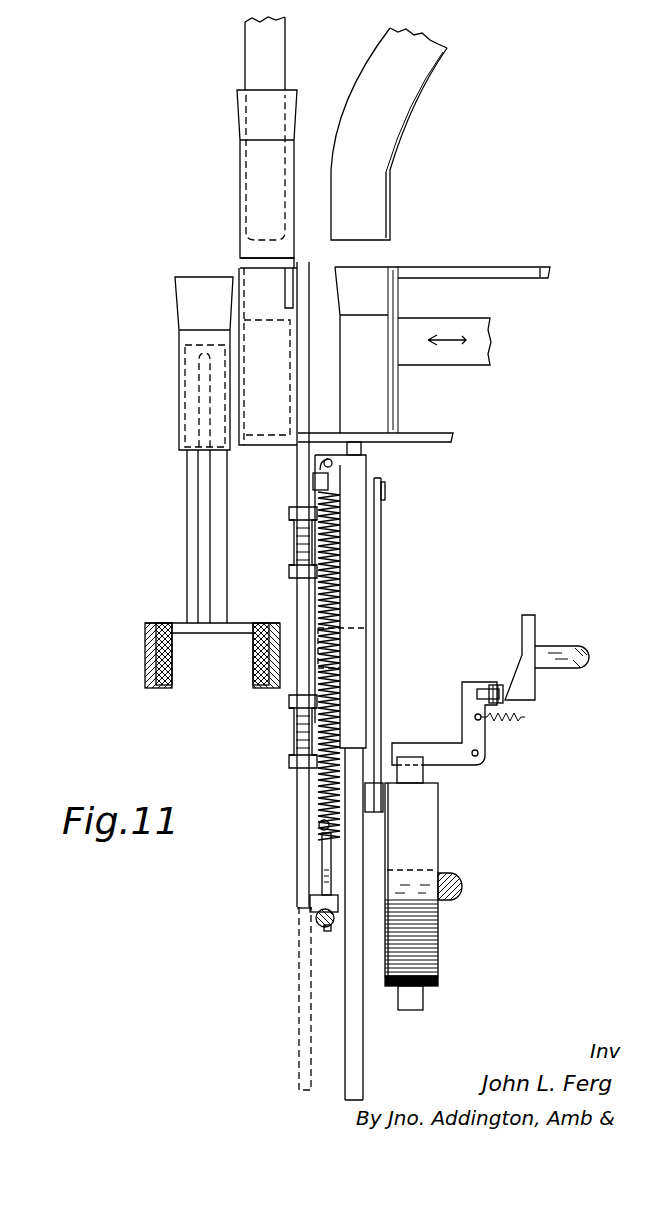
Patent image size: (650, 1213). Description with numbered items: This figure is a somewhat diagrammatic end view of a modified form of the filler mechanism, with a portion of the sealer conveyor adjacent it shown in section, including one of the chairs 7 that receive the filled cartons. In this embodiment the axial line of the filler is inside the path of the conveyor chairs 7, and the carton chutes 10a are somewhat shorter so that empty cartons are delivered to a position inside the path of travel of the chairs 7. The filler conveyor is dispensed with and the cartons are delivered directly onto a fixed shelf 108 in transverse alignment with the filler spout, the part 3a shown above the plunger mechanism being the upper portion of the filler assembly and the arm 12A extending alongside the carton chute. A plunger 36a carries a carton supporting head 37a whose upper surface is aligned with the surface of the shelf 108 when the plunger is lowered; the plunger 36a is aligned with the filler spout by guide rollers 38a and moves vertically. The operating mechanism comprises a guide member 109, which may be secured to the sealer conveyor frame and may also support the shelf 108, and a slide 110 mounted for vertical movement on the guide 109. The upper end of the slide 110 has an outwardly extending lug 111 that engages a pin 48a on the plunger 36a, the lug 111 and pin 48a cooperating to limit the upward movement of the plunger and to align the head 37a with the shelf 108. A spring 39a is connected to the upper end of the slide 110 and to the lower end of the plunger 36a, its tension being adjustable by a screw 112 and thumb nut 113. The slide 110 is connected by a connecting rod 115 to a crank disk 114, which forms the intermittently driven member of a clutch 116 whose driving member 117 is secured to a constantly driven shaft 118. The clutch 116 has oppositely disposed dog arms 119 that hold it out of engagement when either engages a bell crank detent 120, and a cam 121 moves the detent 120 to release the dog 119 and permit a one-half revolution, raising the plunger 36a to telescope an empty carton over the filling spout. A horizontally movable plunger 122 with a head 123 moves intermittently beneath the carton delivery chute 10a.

The plunger rod 3a is at (262, 50).
The carton chute 10a is at (403, 123).
The carton supporting head 37a is at (290, 258).
The supporting arm 12A is at (521, 267).
The head 123 is at (398, 299).
The horizontally movable plunger 122 is at (457, 332).
The fixed shelf 108 is at (423, 443).
The outwardly extending lug 111 is at (362, 456).
The slide 110 is at (353, 568).
The guide member 109 is at (353, 995).
The pin 48a is at (315, 480).
The plunger 36a is at (305, 490).
The spring 39a is at (338, 607).
The guide rollers 38a is at (292, 548).
The chairs 7 is at (198, 517).
The connecting rod 115 is at (380, 653).
The bell crank detent 120 is at (440, 755).
The cam 121 is at (532, 643).
The dog arms 119 is at (412, 773).
The driving member 117 is at (440, 932).
The crank disk 114 is at (385, 928).
The clutch 116 is at (440, 979).
The shaft 118 is at (443, 878).
The screw 112 is at (327, 868).
The thumb nut 113 is at (310, 915).